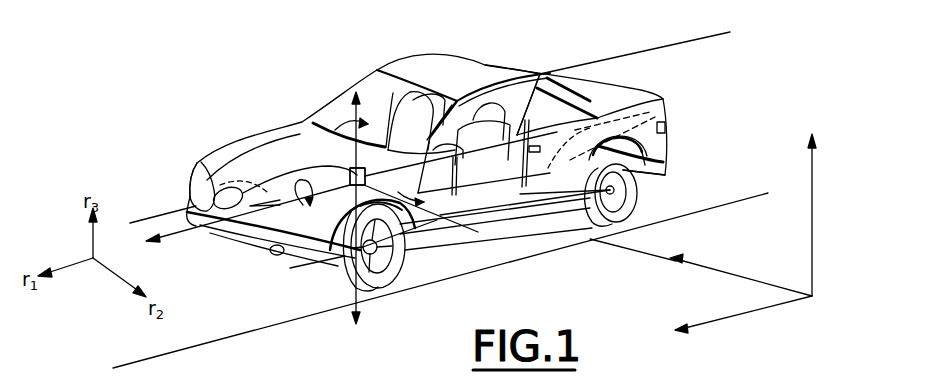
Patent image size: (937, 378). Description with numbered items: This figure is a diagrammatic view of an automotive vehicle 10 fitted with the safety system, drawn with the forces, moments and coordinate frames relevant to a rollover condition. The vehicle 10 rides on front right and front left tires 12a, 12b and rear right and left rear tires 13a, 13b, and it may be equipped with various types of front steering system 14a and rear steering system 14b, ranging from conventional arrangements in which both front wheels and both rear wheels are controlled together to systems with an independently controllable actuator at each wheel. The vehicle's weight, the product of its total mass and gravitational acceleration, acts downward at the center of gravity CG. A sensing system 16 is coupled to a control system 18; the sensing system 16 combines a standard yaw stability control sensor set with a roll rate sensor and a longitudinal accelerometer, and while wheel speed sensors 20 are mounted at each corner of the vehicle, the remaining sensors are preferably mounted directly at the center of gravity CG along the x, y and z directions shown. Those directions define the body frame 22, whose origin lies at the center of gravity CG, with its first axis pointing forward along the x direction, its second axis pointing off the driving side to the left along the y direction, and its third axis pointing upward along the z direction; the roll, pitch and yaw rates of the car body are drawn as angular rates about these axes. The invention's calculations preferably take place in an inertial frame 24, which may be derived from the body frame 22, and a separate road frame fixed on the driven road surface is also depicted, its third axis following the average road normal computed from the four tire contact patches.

The automotive vehicle 10 is at (427, 160).
The front right tire 12a is at (197, 158).
The front left tire 12b is at (404, 254).
The rear right tire 13a is at (501, 53).
The left rear tire 13b is at (630, 208).
The front steering system 14a is at (349, 186).
The rear steering system 14b is at (670, 105).
The sensing system 16 is at (393, 93).
The control system 18 is at (541, 75).
The wheel speed sensors 20 is at (473, 238).
The body frame 22 is at (185, 228).
The inertial frame 24 is at (813, 297).
The center of gravity CG is at (347, 172).